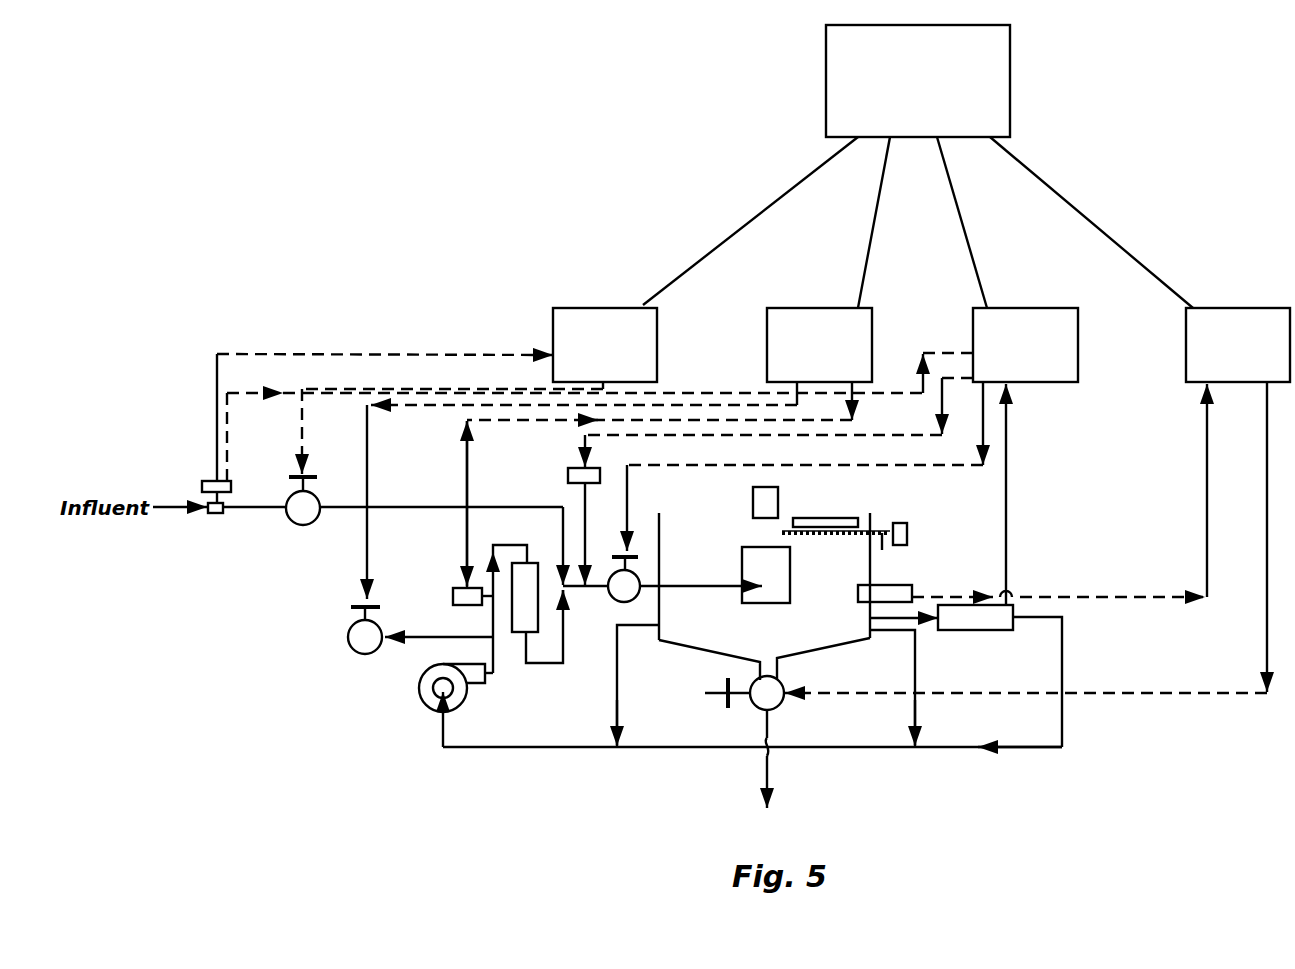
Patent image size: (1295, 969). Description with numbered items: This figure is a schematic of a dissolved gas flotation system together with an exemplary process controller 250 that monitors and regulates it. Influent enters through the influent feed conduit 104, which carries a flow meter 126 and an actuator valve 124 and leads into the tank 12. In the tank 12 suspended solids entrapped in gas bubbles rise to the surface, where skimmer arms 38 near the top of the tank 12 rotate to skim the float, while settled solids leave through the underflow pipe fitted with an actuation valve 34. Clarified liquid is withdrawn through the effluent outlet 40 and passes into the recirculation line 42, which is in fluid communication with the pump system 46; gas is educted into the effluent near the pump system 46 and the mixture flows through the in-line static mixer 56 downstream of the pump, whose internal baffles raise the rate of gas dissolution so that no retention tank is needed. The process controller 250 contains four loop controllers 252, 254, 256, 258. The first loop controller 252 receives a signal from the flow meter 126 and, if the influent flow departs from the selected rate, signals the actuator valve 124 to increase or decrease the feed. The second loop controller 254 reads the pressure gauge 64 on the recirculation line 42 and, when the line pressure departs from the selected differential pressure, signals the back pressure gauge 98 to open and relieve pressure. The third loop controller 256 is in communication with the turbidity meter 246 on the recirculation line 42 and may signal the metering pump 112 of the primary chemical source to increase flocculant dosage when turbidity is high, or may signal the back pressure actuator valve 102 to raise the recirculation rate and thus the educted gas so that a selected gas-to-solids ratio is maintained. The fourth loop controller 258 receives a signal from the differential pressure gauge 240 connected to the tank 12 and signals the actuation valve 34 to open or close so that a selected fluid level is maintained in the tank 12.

The tank 12 is at (822, 634).
The actuation valve 34 is at (725, 703).
The skimmer arms 38 is at (813, 520).
The effluent outlet 40 is at (620, 707).
The recirculation line 42 is at (548, 748).
The pump system 46 is at (420, 700).
The in-line static mixer 56 is at (520, 633).
The pressure gauge 64 is at (453, 592).
The back pressure gauge 98 is at (348, 633).
The back pressure actuator valve 102 is at (643, 578).
The influent feed conduit 104 is at (250, 502).
The metering pump 112 is at (567, 470).
The actuator valve 124 is at (290, 522).
The flow meter 126 is at (202, 482).
The differential pressure gauge 240 is at (912, 585).
The turbidity meter 246 is at (1017, 604).
The process controller 250 is at (918, 166).
The first loop controller 252 is at (605, 331).
The second loop controller 254 is at (819, 331).
The third loop controller 256 is at (1025, 331).
The fourth loop controller 258 is at (1238, 331).